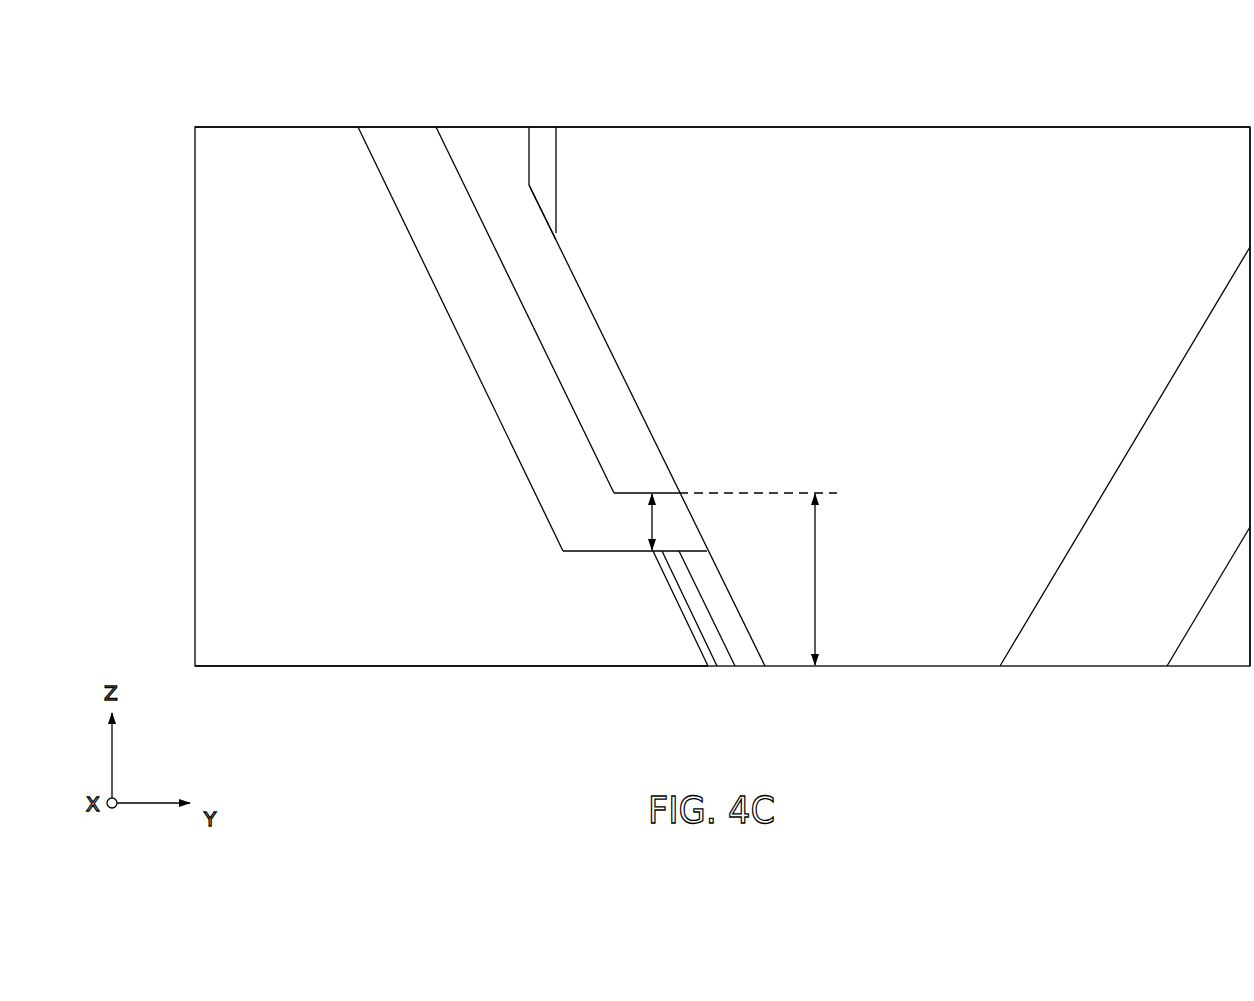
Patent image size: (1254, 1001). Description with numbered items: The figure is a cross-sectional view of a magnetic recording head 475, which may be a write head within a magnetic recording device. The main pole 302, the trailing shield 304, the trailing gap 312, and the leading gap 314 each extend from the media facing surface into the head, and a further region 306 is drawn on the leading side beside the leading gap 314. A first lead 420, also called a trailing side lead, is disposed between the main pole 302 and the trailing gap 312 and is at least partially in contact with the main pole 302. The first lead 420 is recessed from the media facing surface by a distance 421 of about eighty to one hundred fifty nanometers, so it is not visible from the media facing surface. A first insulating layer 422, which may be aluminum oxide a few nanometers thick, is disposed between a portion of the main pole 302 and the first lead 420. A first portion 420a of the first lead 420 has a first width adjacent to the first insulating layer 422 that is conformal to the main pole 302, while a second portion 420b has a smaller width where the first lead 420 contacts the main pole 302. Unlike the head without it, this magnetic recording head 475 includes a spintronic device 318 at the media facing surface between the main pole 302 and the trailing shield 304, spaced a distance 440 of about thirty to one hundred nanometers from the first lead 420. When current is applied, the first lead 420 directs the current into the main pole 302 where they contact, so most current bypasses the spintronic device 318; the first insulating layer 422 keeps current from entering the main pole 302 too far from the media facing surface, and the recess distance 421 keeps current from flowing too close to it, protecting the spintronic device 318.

The magnetic recording head 475 is at (192, 98).
The main pole 302 is at (985, 350).
The trailing shield 304 is at (515, 612).
The doped region 306 is at (1242, 655).
The trailing gap 312 is at (507, 322).
The leading gap 314 is at (1150, 580).
The spintronic device 318 is at (737, 650).
The first lead 420 is at (620, 412).
The first portion of the first lead 420a is at (521, 162).
The second portion of the first lead 420b is at (597, 342).
The distance 421 is at (817, 578).
The first insulating layer 422 is at (545, 148).
The distance 440 is at (625, 522).